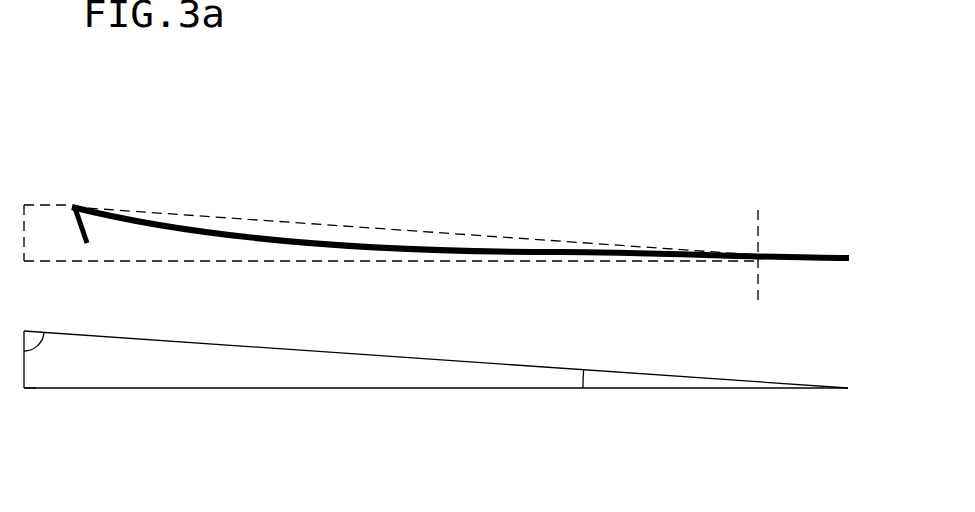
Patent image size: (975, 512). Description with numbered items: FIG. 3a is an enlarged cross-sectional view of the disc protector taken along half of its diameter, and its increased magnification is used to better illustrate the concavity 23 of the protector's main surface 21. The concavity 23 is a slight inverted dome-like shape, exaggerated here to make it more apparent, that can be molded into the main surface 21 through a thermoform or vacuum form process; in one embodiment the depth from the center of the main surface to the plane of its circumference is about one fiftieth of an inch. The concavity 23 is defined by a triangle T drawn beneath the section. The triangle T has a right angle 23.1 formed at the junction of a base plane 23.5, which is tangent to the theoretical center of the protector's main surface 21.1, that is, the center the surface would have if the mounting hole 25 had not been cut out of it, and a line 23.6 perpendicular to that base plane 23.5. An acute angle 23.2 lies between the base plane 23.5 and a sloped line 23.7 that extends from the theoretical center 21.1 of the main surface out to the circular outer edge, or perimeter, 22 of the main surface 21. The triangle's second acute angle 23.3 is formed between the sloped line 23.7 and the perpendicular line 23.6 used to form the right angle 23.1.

The main surface 21 is at (565, 250).
The theoretical center of the main surface 21.1 is at (849, 253).
The circular outer edge of the main surface 22 is at (72, 207).
The concavity 23 is at (392, 217).
The mounting hole 25 is at (758, 210).
The right angle 23.1 is at (52, 377).
The acute angle 23.2 is at (531, 377).
The second acute angle 23.3 is at (61, 348).
The base plane 23.5 is at (283, 388).
The perpendicular line 23.6 is at (28, 388).
The sloped line 23.7 is at (395, 355).
The triangle T is at (228, 368).